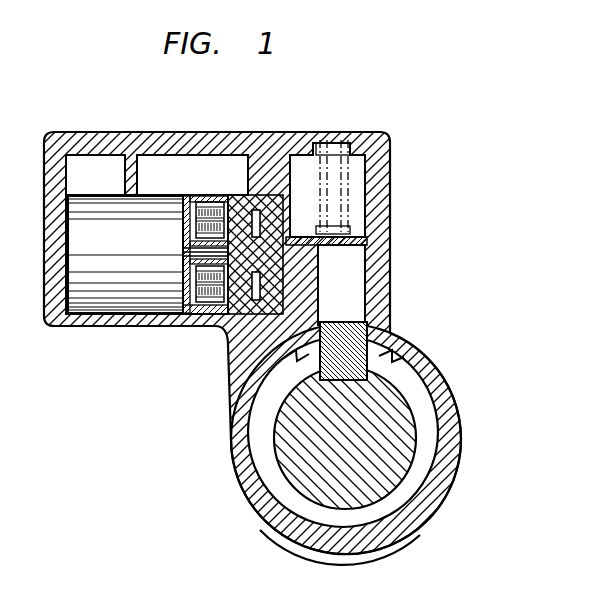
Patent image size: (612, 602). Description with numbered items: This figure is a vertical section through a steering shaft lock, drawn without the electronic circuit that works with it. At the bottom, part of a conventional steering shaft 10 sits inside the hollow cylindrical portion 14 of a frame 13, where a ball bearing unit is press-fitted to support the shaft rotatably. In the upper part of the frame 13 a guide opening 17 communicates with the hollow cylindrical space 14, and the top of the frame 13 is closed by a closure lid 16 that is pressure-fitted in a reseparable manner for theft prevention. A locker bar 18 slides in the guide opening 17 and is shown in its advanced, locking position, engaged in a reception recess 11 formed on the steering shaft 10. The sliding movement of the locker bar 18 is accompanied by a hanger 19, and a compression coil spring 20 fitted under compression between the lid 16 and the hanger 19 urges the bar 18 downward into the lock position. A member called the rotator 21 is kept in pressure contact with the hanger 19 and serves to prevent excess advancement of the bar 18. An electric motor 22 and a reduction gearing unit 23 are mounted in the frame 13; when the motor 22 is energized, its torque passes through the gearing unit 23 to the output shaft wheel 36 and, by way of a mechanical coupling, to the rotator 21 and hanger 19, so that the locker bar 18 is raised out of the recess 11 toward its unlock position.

The steering shaft 10 is at (382, 472).
The reception recess 11 is at (367, 374).
The frame 13 is at (453, 424).
The hollow cylindrical portion 14 is at (290, 497).
The closure lid 16 is at (225, 136).
The guide opening 17 is at (358, 283).
The locker bar 18 is at (338, 362).
The hanger 19 is at (368, 240).
The compression coil spring 20 is at (345, 190).
The rotator 21 is at (228, 366).
The electric motor 22 is at (158, 293).
The gearing unit 23 is at (192, 308).
The output shaft wheel 36 is at (253, 182).